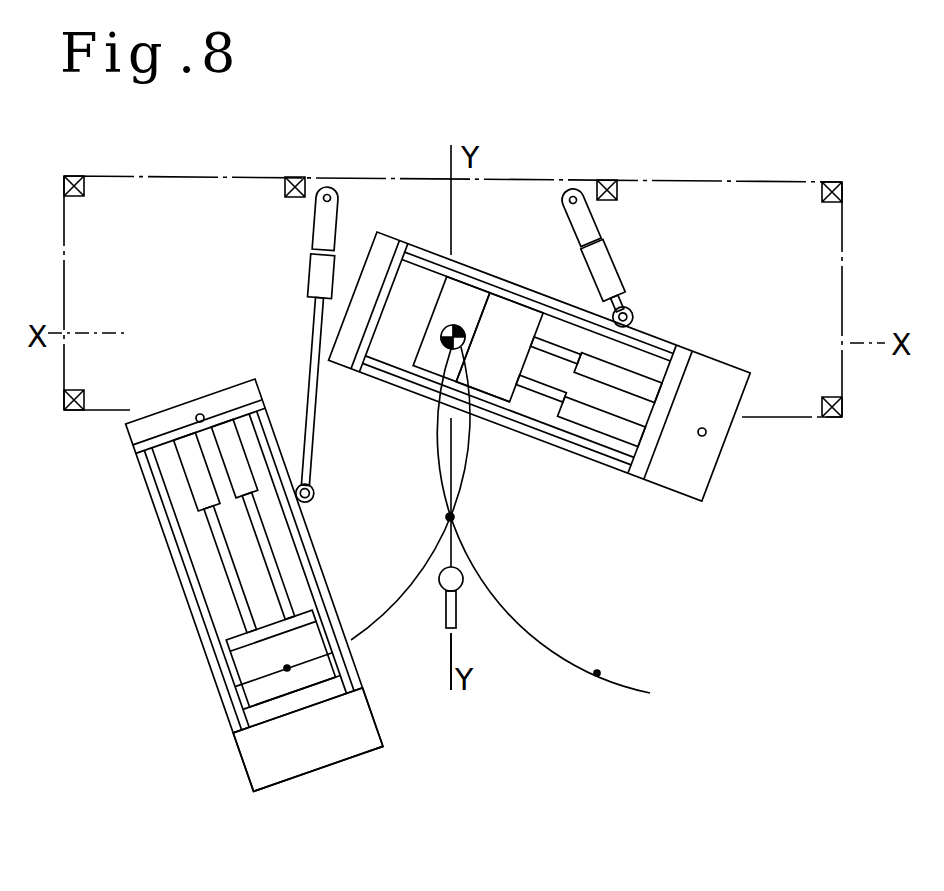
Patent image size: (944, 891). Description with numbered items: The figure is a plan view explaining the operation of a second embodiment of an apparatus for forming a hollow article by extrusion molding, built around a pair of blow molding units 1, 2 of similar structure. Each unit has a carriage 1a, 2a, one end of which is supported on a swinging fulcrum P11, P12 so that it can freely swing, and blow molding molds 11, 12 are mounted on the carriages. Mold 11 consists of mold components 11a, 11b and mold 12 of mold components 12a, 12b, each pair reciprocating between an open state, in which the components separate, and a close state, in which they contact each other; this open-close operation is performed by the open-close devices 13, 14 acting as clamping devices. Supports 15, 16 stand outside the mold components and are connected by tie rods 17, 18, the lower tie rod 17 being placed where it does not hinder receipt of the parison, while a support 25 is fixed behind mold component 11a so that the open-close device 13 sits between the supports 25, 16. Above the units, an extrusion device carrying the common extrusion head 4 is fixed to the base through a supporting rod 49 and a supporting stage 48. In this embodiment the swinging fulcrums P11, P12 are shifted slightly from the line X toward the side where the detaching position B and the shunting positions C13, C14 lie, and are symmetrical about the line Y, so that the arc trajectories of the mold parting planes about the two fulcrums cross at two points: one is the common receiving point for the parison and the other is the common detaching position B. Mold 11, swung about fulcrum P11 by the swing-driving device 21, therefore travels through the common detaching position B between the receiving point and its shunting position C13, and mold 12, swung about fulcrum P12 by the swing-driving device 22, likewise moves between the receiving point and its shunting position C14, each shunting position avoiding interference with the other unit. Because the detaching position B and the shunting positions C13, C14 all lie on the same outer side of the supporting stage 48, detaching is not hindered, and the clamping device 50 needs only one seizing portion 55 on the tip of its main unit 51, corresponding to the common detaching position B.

The blow molding unit 1 is at (176, 589).
The carriage 1a is at (330, 757).
The blow molding unit 2 is at (537, 289).
The carriage 2a is at (338, 367).
The extrusion head 4 is at (454, 324).
The blow molding mold 11 is at (225, 693).
The mold component 11a is at (241, 665).
The mold component 11b is at (229, 726).
The blow molding mold 12 is at (463, 351).
The mold component 12a is at (473, 350).
The mold component 12b is at (412, 350).
The open-close device 13 is at (196, 481).
The open-close device 14 is at (610, 423).
The support 15 is at (358, 367).
The support 16 is at (633, 477).
The tie rod 17 is at (657, 338).
The tie rod 18 is at (573, 447).
The swing-driving device 21 is at (310, 278).
The swing-driving device 22 is at (622, 262).
The support 25 is at (482, 388).
The supporting stage 48 is at (700, 181).
The supporting rod 49 is at (607, 180).
The clamping device 50 is at (459, 611).
The main unit 51 is at (445, 613).
The seizing portion 55 is at (463, 579).
The common detaching position B is at (455, 517).
The shunting position C13 is at (296, 687).
The shunting position C14 is at (597, 675).
The swinging fulcrum P11 is at (199, 412).
The swinging fulcrum P12 is at (705, 437).